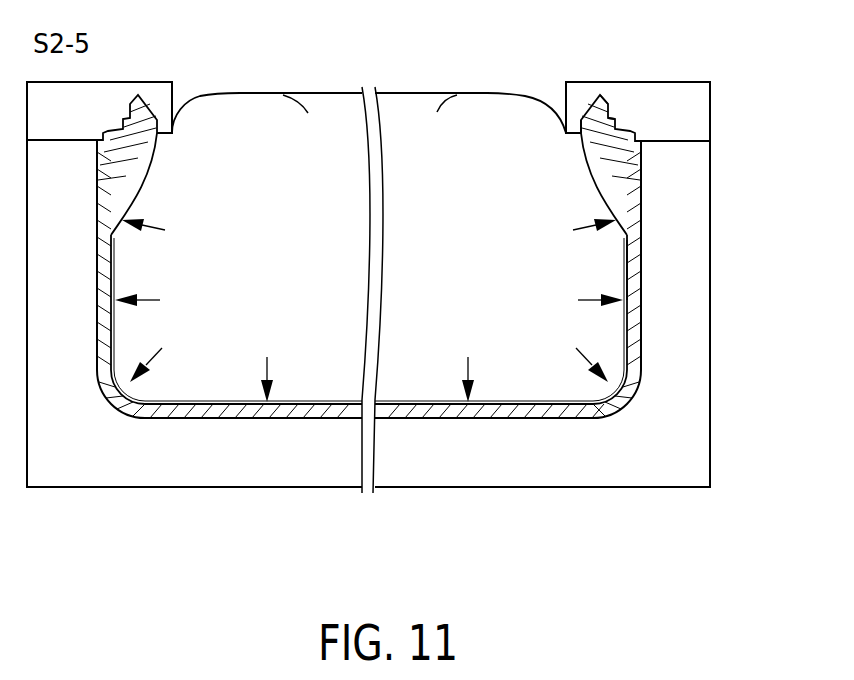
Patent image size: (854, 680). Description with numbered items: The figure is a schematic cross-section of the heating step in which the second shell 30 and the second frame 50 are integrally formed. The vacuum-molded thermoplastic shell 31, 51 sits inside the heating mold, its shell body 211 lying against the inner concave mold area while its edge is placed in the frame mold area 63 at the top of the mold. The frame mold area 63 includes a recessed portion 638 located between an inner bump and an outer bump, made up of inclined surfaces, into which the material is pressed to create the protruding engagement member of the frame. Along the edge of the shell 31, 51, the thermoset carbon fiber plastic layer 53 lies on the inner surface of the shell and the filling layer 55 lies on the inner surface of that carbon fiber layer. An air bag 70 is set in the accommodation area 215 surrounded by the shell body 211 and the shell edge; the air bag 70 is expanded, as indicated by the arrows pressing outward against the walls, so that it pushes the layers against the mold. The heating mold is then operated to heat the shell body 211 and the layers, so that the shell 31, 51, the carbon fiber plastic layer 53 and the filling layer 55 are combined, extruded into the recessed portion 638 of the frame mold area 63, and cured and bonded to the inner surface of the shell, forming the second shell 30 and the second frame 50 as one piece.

The air bag 70 is at (417, 120).
The filling layer 55 is at (587, 121).
The recessed portion 638 is at (607, 125).
The thermoset carbon fiber plastic layer 53 is at (616, 124).
The second frame 50 is at (655, 132).
The frame mold area 63 is at (687, 170).
The shell 31 is at (452, 256).
The shell 51 is at (642, 233).
The accommodation area 215 is at (588, 333).
The shell body 211 is at (552, 419).
The second shell 30 is at (630, 428).